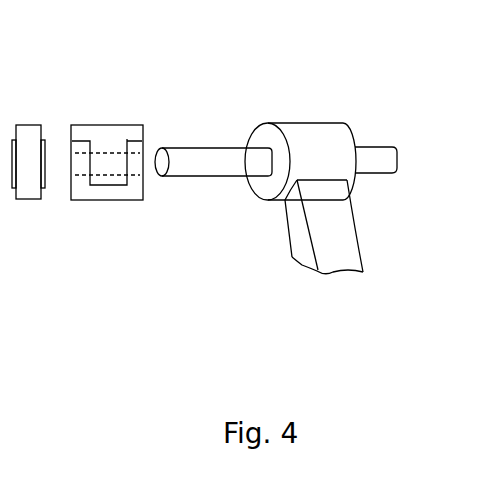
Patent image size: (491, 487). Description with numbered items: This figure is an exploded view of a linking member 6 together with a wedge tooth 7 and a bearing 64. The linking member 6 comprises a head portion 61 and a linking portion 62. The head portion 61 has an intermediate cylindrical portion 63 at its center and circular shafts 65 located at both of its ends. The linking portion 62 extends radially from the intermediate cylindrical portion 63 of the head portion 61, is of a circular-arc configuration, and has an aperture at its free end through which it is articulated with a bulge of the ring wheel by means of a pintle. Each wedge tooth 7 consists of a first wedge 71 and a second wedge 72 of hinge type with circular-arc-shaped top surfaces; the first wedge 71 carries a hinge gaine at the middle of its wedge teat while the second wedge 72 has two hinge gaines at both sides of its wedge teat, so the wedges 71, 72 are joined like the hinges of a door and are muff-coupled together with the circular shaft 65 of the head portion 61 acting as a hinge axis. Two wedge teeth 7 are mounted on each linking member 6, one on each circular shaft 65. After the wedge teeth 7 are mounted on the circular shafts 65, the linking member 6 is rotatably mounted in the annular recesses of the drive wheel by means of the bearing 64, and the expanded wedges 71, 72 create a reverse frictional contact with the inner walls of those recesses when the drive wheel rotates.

The linking member 6 is at (363, 213).
The wedge tooth 7 is at (98, 200).
The head portion 61 is at (298, 123).
The linking portion 62 is at (295, 222).
The intermediate cylindrical portion 63 is at (327, 143).
The bearing 64 is at (26, 190).
The circular shaft 65 is at (222, 160).
The first wedge 71 is at (100, 131).
The second wedge 72 is at (133, 190).